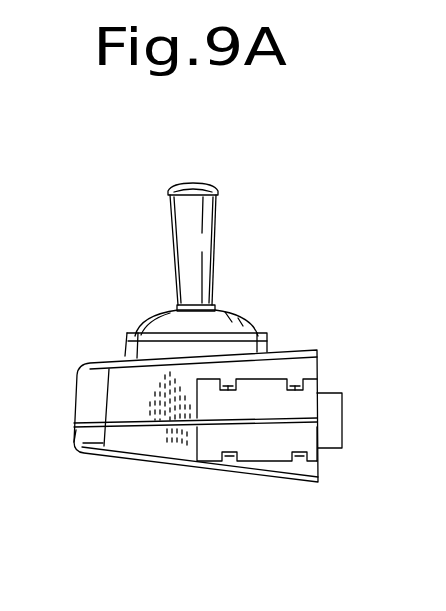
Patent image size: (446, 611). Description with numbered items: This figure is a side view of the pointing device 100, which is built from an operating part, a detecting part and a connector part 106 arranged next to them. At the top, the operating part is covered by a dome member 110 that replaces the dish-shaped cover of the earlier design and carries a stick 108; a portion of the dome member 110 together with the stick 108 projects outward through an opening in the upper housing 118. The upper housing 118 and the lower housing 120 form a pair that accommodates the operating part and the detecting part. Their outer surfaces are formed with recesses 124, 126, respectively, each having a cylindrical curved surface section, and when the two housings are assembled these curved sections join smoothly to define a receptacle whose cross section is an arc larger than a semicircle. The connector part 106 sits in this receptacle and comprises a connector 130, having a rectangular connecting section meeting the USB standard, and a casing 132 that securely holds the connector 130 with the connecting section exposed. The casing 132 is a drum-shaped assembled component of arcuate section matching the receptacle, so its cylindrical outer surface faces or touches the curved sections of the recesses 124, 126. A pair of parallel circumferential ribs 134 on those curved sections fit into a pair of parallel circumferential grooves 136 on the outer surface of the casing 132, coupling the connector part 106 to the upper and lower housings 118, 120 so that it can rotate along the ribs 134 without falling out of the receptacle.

The pointing device 100 is at (339, 196).
The connector part 106 is at (306, 406).
The stick 108 is at (202, 233).
The dome member 110 is at (167, 317).
The upper housing 118 is at (123, 397).
The lower housing 120 is at (132, 435).
The recess 124 is at (216, 392).
The recess 126 is at (199, 440).
The connector 130 is at (340, 420).
The casing 132 is at (293, 434).
The ribs 134 is at (223, 392).
The grooves 136 is at (297, 467).